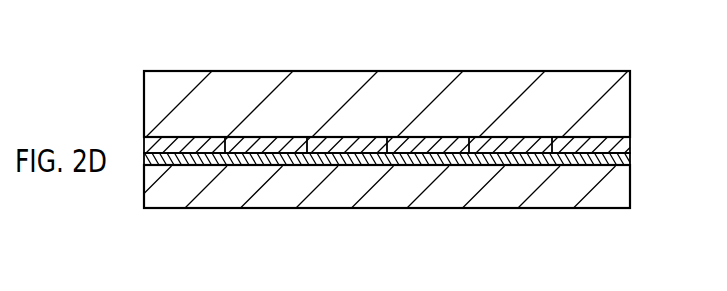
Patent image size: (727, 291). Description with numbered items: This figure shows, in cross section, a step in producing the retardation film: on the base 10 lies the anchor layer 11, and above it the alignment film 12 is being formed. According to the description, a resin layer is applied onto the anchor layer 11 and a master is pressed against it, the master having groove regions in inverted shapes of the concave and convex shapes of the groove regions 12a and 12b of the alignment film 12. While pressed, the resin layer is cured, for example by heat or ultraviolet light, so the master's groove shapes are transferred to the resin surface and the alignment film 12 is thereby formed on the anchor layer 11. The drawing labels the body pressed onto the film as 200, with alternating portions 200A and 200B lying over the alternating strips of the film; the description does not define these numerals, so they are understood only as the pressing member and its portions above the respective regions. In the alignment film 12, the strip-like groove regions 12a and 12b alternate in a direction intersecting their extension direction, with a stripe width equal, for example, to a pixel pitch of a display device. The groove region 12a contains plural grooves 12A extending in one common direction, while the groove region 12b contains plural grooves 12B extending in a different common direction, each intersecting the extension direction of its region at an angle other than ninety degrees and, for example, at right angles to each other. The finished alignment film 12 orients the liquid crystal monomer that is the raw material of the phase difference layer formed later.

The laminate / stacked body 200 is at (622, 103).
The first region 200A is at (175, 130).
The second region 200B is at (267, 130).
The alignment film 12 is at (639, 137).
The grooves 12A is at (209, 147).
The grooves 12B is at (289, 147).
The groove region 12a is at (169, 144).
The groove region 12b is at (247, 144).
The anchor layer 11 is at (615, 159).
The base 10 is at (620, 185).